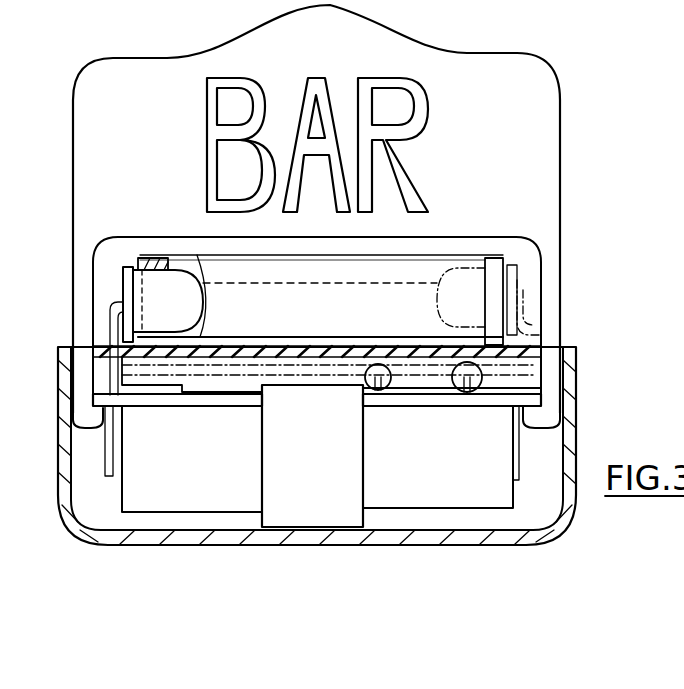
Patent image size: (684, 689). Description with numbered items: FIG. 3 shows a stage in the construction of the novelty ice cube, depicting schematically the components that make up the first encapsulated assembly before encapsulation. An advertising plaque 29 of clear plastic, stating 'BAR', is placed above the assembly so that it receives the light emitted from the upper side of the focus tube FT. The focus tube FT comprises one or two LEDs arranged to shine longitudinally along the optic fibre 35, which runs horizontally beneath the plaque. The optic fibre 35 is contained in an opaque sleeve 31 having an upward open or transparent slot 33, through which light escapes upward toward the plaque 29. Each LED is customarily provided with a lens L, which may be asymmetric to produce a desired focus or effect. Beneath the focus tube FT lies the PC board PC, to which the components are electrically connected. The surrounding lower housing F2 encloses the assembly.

The advertising plaque 29 is at (540, 123).
The opaque sleeve 31 is at (152, 283).
The slot 33 is at (388, 283).
The optic fibre 35 is at (339, 320).
The focus tube FT is at (440, 283).
The lens L is at (138, 264).
The PC board PC is at (510, 397).
The bottom frame shell F2 is at (565, 408).